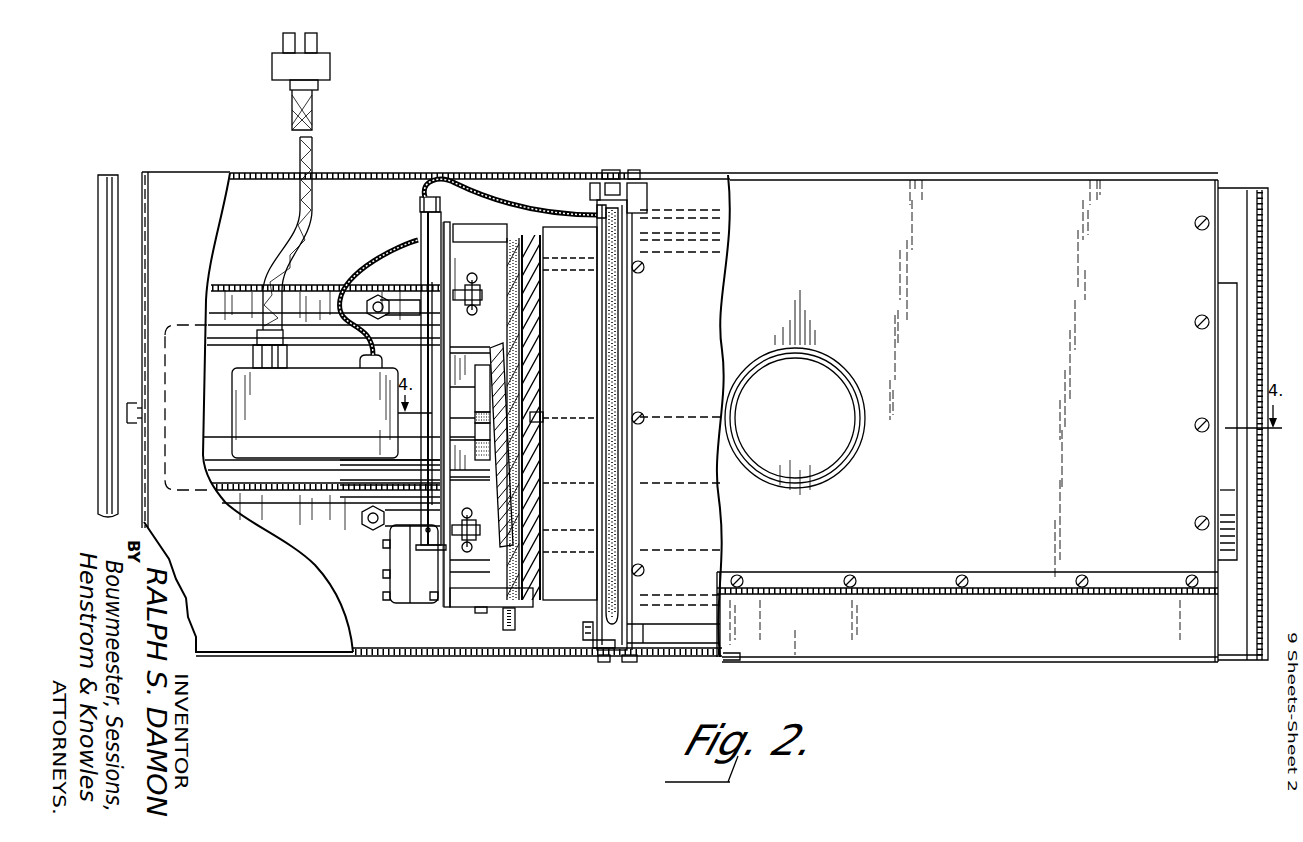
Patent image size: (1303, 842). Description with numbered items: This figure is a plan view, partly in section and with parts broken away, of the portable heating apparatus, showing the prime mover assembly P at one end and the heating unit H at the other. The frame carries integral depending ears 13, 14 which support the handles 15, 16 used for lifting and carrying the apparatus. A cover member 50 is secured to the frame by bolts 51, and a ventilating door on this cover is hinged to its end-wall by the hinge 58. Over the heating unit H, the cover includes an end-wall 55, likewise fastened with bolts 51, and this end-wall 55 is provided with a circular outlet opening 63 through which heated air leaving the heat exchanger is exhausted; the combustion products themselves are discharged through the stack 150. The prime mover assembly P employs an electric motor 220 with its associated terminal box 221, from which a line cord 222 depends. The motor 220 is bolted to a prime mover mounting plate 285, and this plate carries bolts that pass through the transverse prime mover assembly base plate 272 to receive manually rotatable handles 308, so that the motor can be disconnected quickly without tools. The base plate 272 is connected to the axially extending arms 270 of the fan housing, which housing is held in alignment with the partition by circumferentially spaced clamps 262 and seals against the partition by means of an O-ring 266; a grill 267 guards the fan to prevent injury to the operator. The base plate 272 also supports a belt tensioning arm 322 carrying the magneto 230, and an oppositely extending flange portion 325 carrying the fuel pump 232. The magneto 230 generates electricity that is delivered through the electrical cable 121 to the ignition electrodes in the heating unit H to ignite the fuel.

The depending ear 13 is at (1230, 665).
The depending ear 14 is at (138, 174).
The handle 15 is at (1260, 230).
The handle 16 is at (102, 200).
The cover member 50 is at (455, 150).
The bolt 51 is at (612, 171).
The end-wall 55 is at (1218, 270).
The hinge 58 is at (140, 295).
The circular outlet opening 63 is at (1228, 503).
The electrical cable 121 is at (535, 205).
The stack 150 is at (830, 366).
The electric motor 220 is at (350, 361).
The terminal box 221 is at (318, 426).
The line cord 222 is at (312, 168).
The magneto 230 is at (456, 212).
The fuel pump 232 is at (421, 594).
The clamp 262 is at (596, 193).
The O-ring 266 is at (608, 447).
The grill 267 is at (550, 345).
The axially extending arm 270 is at (491, 415).
The prime mover assembly base plate 272 is at (472, 414).
The prime mover mounting plate 285 is at (438, 330).
The manually rotatable handle 308 is at (478, 280).
The belt tensioning arm 322 is at (503, 243).
The flange portion 325 is at (479, 613).
The heating unit H is at (682, 337).
The prime mover assembly P is at (262, 492).